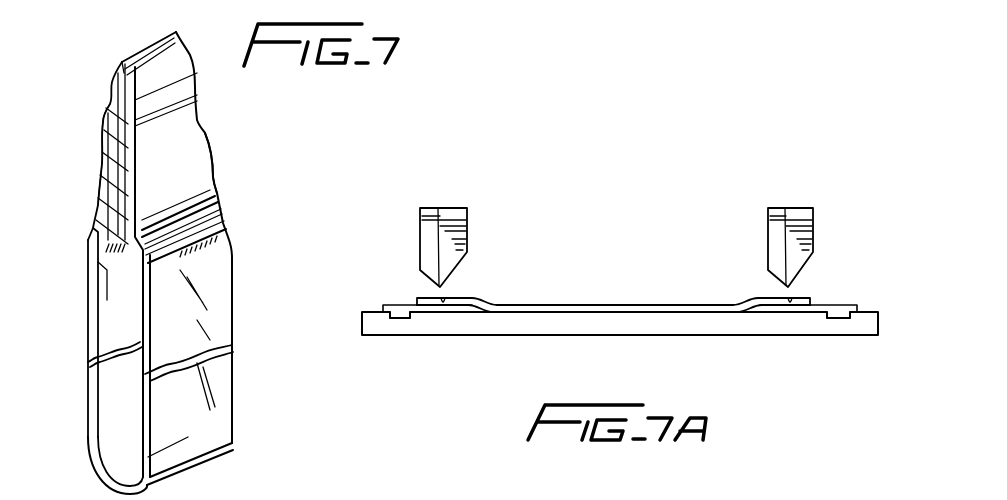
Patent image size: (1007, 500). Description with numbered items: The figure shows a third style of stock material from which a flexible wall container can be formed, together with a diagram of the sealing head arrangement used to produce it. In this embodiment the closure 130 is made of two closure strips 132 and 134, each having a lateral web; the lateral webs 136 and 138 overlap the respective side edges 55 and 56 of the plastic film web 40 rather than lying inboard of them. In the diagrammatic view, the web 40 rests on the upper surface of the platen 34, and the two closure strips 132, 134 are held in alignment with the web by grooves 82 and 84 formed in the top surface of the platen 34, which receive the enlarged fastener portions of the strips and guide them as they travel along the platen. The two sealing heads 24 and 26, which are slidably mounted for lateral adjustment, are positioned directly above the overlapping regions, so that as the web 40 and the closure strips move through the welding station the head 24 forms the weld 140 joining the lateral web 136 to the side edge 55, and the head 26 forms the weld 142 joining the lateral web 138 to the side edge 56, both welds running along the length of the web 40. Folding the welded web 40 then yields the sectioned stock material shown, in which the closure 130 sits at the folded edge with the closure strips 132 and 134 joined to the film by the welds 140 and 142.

In FIG. 7A, the sealing head 24 is at (467, 223).
In FIG. 7A, the sealing head 26 is at (810, 232).
In FIG. 7A, the platen 34 is at (503, 327).
In FIG. 7, the film web 40 is at (92, 437).
In FIG. 7A, the film web 40 is at (647, 304).
In FIG. 7, the side edge of the film 55 is at (222, 223).
In FIG. 7, the side edge of the film 56 is at (93, 228).
In FIG. 7A, the groove 82 is at (400, 320).
In FIG. 7A, the groove 84 is at (838, 320).
In FIG. 7, the closure 130 is at (103, 160).
In FIG. 7, the closure strip 132 is at (158, 167).
In FIG. 7A, the closure strip 132 is at (403, 305).
In FIG. 7, the closure strip 134 is at (105, 120).
In FIG. 7A, the closure strip 134 is at (828, 305).
In FIG. 7, the lateral web 136 is at (213, 189).
In FIG. 7, the lateral web 138 is at (102, 218).
In FIG. 7, the weld 140 is at (217, 237).
In FIG. 7, the weld 142 is at (107, 270).